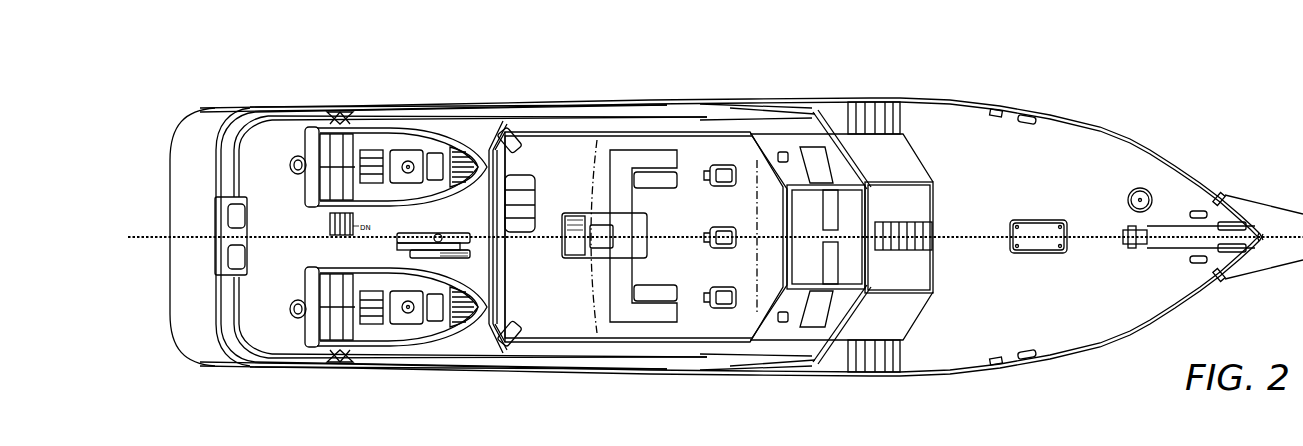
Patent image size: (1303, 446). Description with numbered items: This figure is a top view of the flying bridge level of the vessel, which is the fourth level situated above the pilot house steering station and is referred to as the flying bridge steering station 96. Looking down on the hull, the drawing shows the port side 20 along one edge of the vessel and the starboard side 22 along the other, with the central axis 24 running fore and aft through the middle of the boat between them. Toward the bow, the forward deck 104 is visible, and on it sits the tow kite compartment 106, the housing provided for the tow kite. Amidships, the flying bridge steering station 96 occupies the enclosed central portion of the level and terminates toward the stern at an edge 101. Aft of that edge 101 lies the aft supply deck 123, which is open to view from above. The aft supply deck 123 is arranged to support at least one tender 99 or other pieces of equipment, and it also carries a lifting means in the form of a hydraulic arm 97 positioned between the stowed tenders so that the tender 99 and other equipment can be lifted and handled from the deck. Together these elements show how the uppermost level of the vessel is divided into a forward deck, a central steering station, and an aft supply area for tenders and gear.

The port side 20 is at (973, 102).
The starboard side 22 is at (973, 370).
The central axis 24 is at (128, 235).
The flying bridge steering station 96 is at (707, 212).
The hydraulic arm 97 is at (447, 232).
The tender 99 is at (395, 138).
The edge 101 is at (490, 258).
The forward deck 104 is at (1065, 175).
The tow kite compartment 106 is at (1024, 214).
The aft supply deck 123 is at (472, 343).